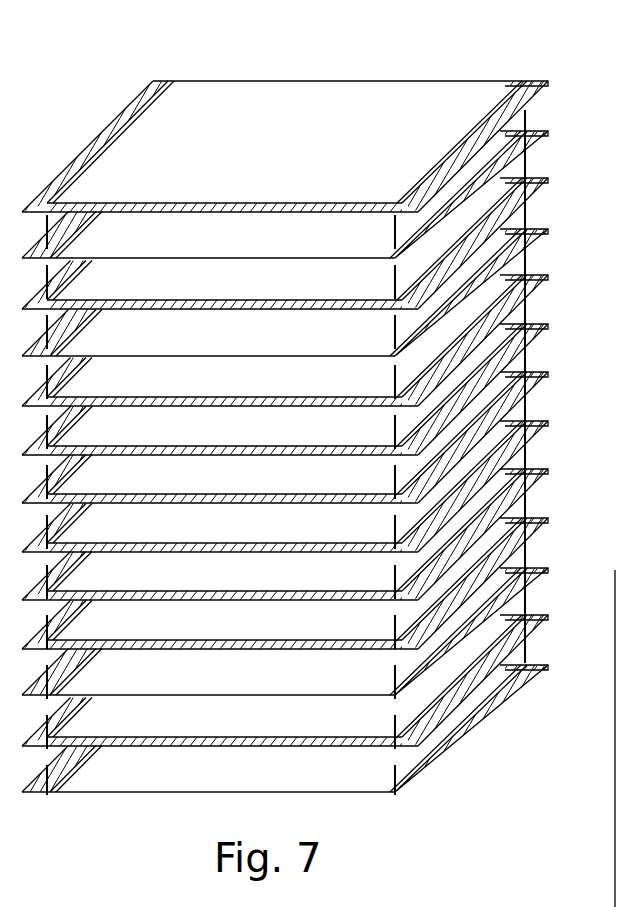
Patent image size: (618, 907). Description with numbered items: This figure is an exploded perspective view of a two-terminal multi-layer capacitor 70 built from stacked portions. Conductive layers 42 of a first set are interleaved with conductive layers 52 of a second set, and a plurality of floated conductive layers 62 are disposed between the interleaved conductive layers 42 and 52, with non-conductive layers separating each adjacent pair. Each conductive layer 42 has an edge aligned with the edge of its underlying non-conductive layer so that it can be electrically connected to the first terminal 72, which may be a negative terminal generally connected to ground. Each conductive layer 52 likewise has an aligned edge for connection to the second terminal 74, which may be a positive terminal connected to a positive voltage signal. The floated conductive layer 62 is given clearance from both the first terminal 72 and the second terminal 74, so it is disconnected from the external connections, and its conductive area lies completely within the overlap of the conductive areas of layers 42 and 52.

The multi-layer capacitor 70 is at (272, 49).
The conductive layer 42 is at (228, 189).
The conductive layer 52 is at (228, 392).
The floated conductive layer 62 is at (228, 254).
The first terminal 72 is at (526, 120).
The second terminal 74 is at (396, 767).